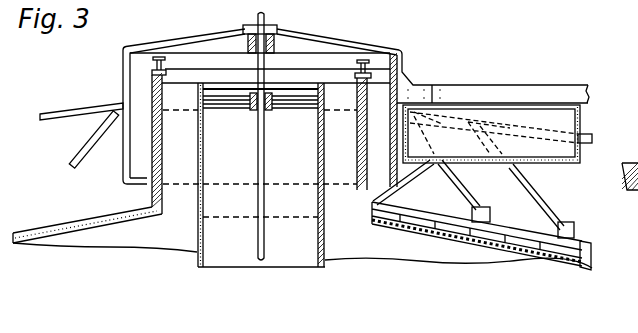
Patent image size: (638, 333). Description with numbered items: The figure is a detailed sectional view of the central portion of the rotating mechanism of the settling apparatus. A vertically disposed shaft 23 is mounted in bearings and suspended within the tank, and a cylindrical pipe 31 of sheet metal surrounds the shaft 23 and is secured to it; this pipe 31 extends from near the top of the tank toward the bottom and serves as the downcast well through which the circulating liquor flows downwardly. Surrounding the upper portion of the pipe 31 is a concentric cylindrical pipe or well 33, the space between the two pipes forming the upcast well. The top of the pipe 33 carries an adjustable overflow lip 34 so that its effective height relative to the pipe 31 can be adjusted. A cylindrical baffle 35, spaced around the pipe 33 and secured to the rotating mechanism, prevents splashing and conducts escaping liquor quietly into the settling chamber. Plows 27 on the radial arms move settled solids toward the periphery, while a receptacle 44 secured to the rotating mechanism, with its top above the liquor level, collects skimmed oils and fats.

The shaft 23 is at (262, 162).
The plows 27 is at (463, 230).
The cylindrical pipe 31 is at (323, 160).
The cylindrical pipe or well 33 is at (182, 210).
The adjustable overflow lip 34 is at (180, 69).
The cylindrical baffle 35 is at (123, 173).
The receptacle 44 is at (585, 113).